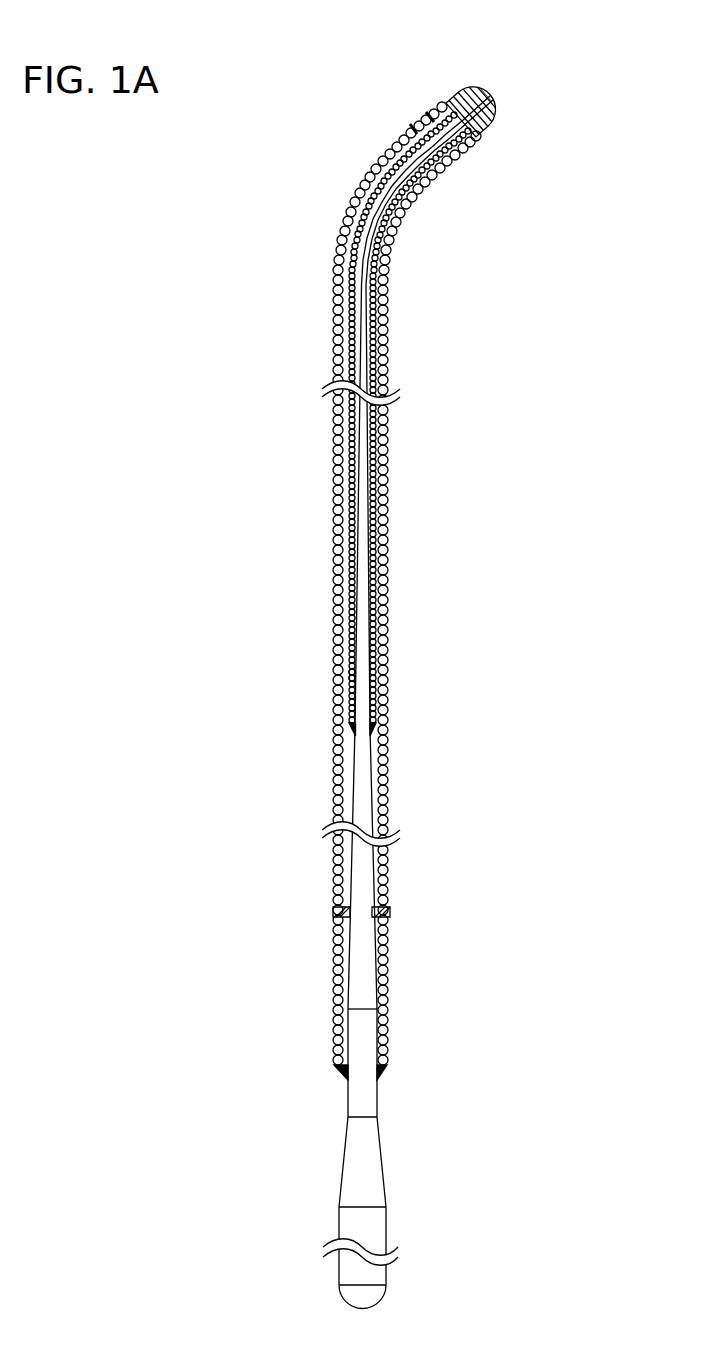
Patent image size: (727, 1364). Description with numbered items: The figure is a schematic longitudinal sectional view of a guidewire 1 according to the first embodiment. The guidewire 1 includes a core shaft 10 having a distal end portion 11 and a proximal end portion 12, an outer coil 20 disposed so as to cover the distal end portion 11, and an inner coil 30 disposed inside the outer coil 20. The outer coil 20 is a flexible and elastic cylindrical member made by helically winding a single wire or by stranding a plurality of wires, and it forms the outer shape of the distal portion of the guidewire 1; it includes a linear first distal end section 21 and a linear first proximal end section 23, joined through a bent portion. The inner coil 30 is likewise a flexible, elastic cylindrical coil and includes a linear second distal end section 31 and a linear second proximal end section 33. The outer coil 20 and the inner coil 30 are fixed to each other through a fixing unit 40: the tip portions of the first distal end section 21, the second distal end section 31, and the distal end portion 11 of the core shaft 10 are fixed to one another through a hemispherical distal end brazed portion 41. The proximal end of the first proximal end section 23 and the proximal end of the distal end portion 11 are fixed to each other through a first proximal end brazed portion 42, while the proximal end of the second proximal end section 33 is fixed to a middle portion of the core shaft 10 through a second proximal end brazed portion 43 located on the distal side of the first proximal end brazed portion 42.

The guidewire 1 is at (233, 143).
The core shaft 10 is at (362, 797).
The distal end portion 11 is at (410, 128).
The proximal end portion 12 is at (348, 1275).
The outer coil 20 is at (340, 340).
The first distal end section 21 is at (473, 179).
The first proximal end section 23 is at (413, 996).
The inner coil 30 is at (340, 278).
The second distal end section 31 is at (426, 114).
The second proximal end section 33 is at (326, 675).
The fixing unit 40 is at (446, 70).
The distal end brazed portion 41 is at (492, 101).
The first proximal end brazed portion 42 is at (384, 1073).
The second proximal end brazed portion 43 is at (378, 725).